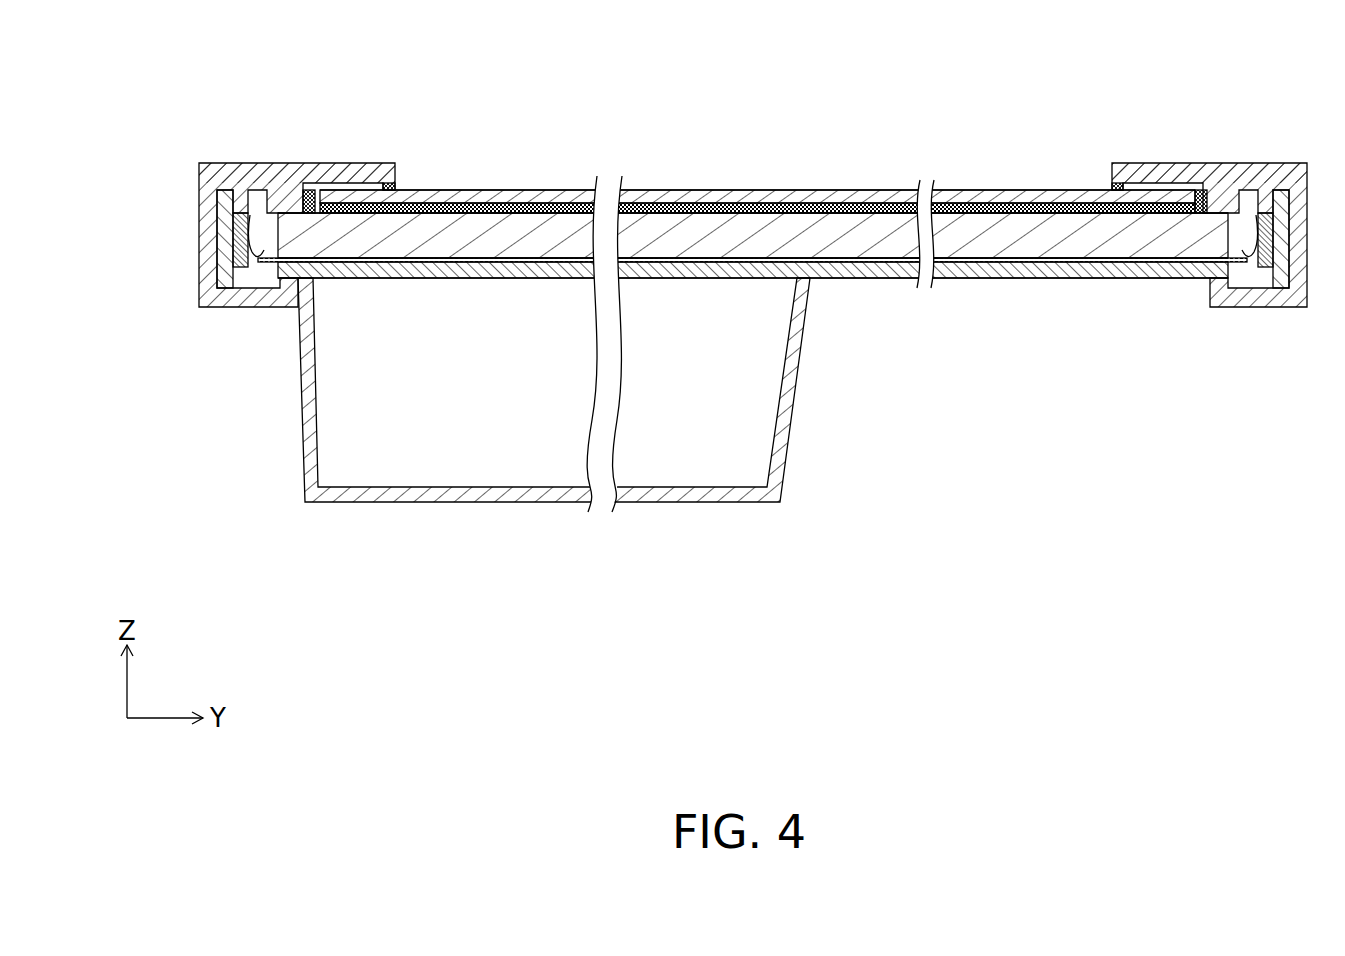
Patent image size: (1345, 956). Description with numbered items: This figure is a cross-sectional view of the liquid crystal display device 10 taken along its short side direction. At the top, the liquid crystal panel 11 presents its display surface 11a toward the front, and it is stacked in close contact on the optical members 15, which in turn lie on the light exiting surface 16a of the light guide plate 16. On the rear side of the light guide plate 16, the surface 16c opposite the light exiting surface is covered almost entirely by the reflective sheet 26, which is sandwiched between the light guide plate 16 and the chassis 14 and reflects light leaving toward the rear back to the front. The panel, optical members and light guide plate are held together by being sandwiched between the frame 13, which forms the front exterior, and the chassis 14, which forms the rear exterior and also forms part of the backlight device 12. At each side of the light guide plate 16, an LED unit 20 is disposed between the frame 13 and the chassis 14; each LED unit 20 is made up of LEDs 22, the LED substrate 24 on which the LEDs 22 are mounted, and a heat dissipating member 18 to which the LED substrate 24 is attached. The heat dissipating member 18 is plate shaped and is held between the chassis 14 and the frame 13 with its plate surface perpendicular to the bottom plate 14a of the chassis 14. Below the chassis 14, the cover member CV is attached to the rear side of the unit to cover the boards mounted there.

The liquid crystal display device 10 is at (708, 98).
The liquid crystal panel 11 is at (663, 203).
The display surface 11a is at (718, 192).
The backlight device 12 is at (1007, 360).
The frame 13 is at (348, 172).
The chassis 14 is at (943, 279).
The bottom plate 14a is at (833, 280).
The optical members 15 is at (805, 208).
The light guide plate 16 is at (873, 232).
The light exiting surface 16a is at (970, 210).
The surface opposite to the light exiting surface 16c is at (1065, 264).
The heat dissipating member 18 is at (224, 276).
The LED unit 20 is at (754, 169).
The LED 22 is at (262, 228).
The LED substrate 24 is at (230, 166).
The reflective sheet 26 is at (1027, 262).
The cover member CV is at (487, 503).